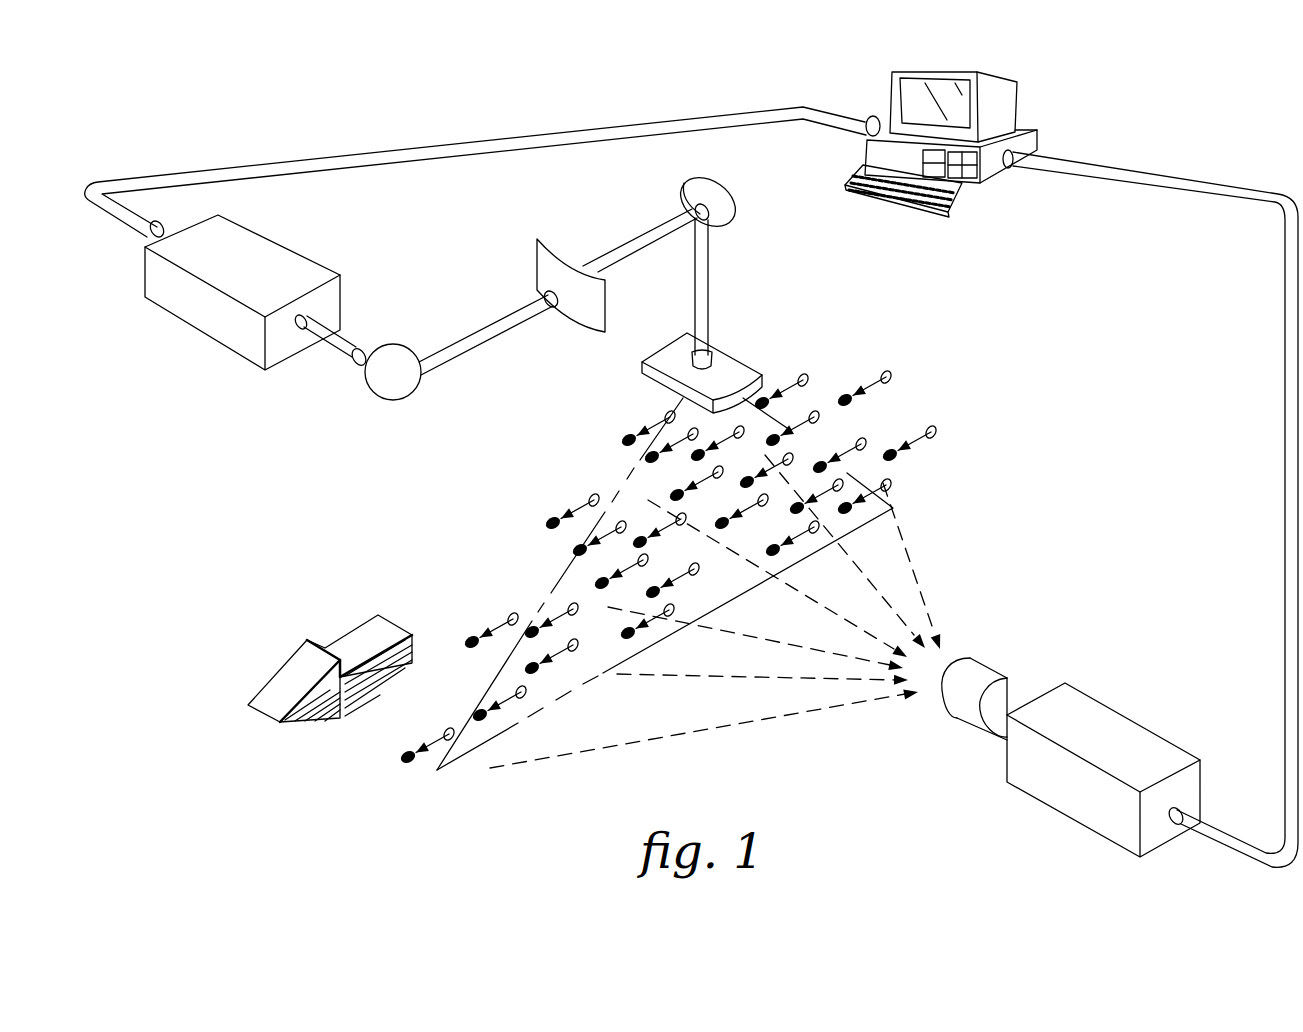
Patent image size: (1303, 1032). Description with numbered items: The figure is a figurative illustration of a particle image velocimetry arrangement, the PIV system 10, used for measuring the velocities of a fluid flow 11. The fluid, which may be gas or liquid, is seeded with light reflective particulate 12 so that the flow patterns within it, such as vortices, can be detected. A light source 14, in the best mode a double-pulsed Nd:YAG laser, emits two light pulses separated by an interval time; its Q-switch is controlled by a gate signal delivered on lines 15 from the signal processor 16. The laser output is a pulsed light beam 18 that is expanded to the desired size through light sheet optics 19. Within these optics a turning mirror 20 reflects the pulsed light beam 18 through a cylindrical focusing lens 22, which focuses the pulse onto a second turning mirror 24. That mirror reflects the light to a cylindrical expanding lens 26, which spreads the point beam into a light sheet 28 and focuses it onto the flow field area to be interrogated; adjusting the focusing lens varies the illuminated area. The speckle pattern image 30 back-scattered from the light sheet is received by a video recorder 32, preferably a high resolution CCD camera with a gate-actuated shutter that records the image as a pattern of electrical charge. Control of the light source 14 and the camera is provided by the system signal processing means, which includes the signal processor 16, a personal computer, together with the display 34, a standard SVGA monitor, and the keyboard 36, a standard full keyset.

The PIV system 10 is at (250, 145).
The fluid flow 11 is at (530, 551).
The light reflective particulate 12 is at (890, 376).
The light source 14 is at (240, 246).
The lines 15 is at (445, 146).
The signal processor 16 is at (1037, 144).
The pulsed light beam 18 is at (343, 343).
The light sheet optics 19 is at (495, 258).
The turning mirror 20 is at (393, 388).
The cylindrical focusing lens 22 is at (563, 313).
The second turning mirror 24 is at (686, 190).
The cylindrical expanding lens 26 is at (733, 377).
The light sheet 28 is at (815, 444).
The speckle pattern image 30 is at (890, 608).
The video recorder 32 is at (1107, 723).
The display 34 is at (997, 73).
The keyboard 36 is at (895, 193).